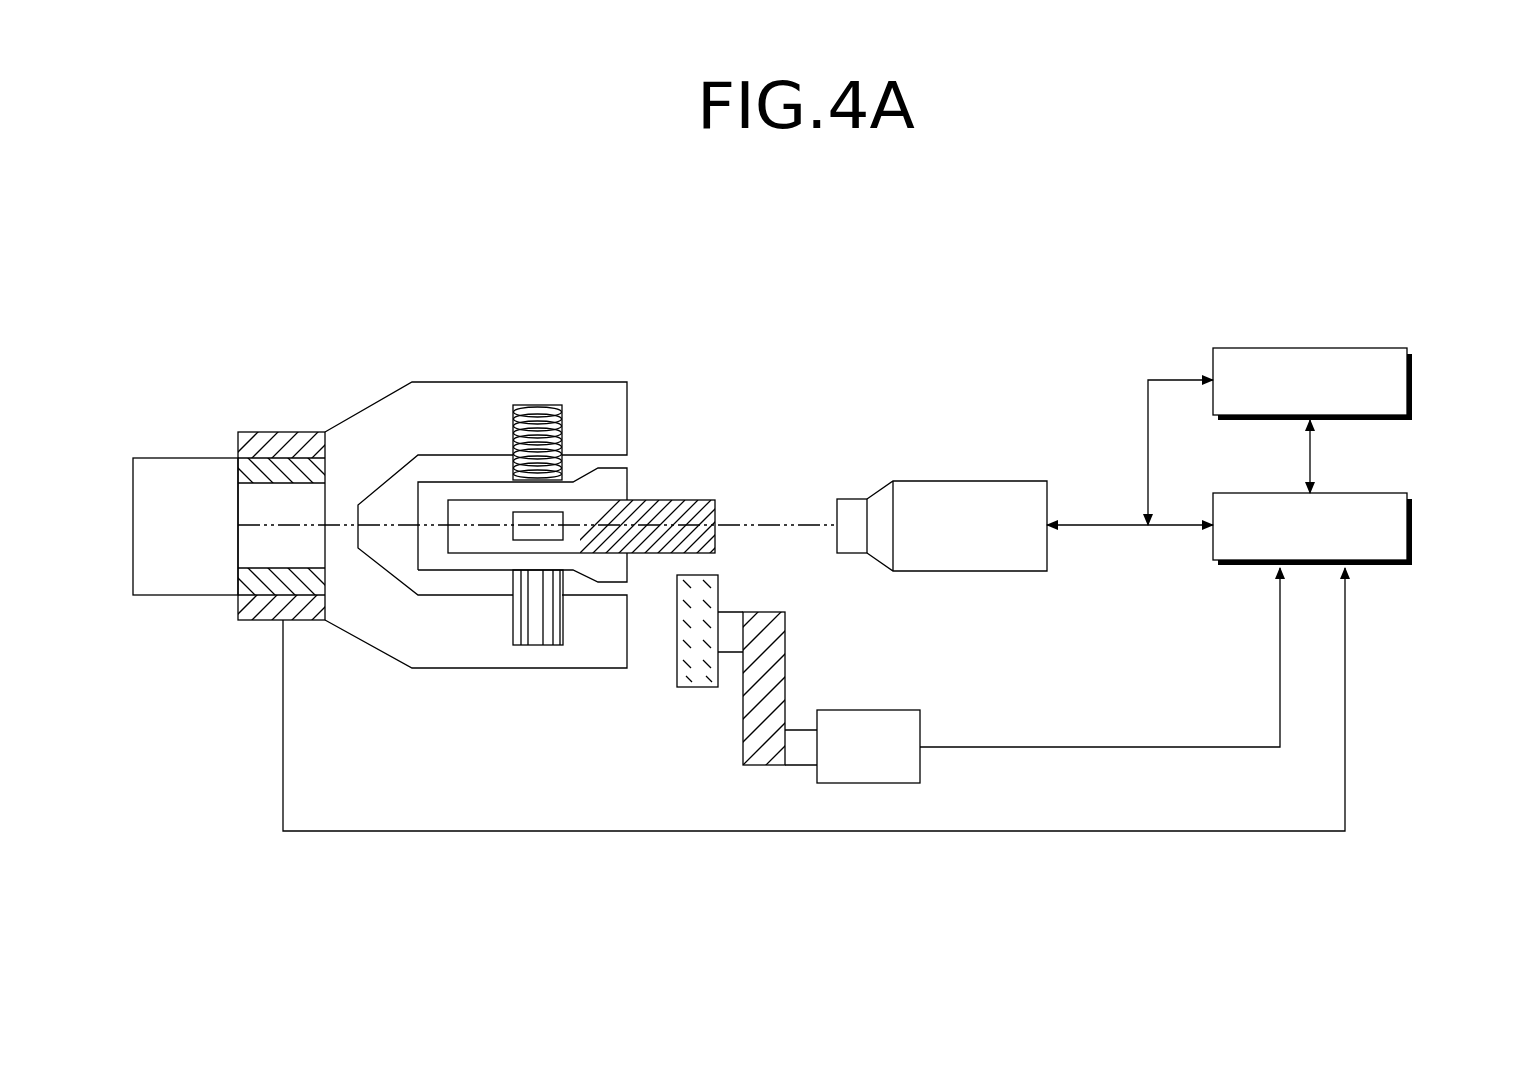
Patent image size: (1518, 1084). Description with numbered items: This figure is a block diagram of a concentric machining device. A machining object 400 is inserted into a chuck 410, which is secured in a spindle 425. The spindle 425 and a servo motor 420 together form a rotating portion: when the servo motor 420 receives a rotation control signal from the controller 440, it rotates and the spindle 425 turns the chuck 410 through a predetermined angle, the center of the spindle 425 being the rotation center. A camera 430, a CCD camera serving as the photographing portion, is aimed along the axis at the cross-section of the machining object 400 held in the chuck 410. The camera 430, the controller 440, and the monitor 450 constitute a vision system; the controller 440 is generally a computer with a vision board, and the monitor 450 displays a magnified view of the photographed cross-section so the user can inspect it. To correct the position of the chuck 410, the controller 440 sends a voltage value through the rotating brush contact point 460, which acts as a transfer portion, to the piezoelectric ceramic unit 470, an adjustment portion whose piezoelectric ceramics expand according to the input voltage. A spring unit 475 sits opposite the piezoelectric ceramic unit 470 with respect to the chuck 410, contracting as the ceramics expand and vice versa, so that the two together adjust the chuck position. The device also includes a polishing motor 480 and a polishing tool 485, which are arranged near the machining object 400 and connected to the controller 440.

The machining object 400 is at (707, 498).
The chuck 410 is at (625, 478).
The servo motor 420 is at (181, 457).
The spindle 425 is at (452, 392).
The camera 430 is at (962, 481).
The controller 440 is at (1413, 527).
The monitor 450 is at (1413, 382).
The rotating brush contact point 460 is at (241, 621).
The piezoelectric ceramic unit 470 is at (540, 646).
The spring unit 475 is at (536, 404).
The polishing motor 480 is at (866, 710).
The polishing tool 485 is at (697, 690).